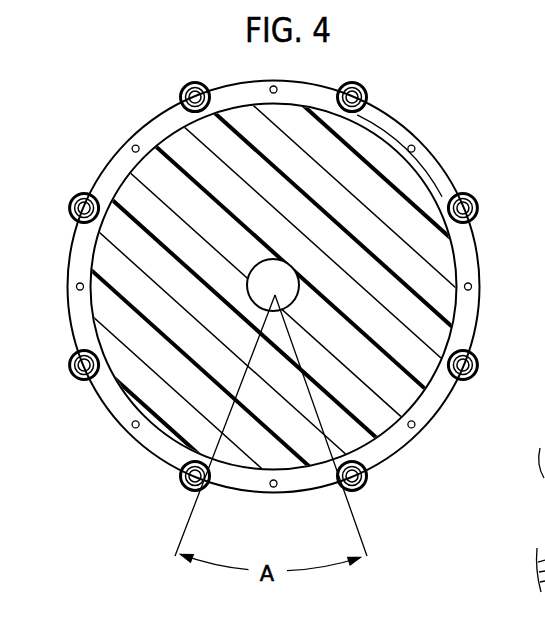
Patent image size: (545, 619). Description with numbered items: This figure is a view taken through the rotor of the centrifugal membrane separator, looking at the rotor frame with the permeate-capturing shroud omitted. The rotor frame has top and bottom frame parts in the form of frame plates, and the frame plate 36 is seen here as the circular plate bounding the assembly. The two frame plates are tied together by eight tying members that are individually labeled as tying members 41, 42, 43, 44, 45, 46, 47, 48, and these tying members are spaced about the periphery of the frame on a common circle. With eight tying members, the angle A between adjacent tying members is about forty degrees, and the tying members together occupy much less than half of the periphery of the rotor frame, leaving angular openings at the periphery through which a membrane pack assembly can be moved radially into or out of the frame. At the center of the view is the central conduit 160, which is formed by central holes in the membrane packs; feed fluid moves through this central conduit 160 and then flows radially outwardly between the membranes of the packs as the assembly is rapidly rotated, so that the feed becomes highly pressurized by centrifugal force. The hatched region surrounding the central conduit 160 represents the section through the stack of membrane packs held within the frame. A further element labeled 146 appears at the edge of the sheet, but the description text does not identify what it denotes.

The frame plate 36 is at (390, 128).
The tying member 41 is at (478, 362).
The tying member 42 is at (367, 478).
The tying member 43 is at (181, 482).
The tying member 44 is at (70, 369).
The tying member 45 is at (70, 203).
The tying member 46 is at (182, 89).
The tying member 47 is at (365, 90).
The tying member 48 is at (477, 204).
The central conduit 160 is at (292, 293).
The fragment of adjacent figure component 146 is at (544, 504).